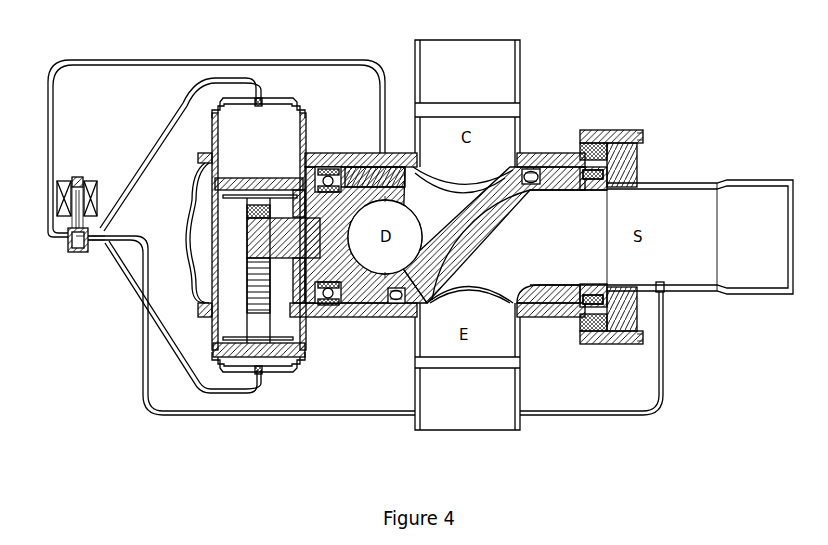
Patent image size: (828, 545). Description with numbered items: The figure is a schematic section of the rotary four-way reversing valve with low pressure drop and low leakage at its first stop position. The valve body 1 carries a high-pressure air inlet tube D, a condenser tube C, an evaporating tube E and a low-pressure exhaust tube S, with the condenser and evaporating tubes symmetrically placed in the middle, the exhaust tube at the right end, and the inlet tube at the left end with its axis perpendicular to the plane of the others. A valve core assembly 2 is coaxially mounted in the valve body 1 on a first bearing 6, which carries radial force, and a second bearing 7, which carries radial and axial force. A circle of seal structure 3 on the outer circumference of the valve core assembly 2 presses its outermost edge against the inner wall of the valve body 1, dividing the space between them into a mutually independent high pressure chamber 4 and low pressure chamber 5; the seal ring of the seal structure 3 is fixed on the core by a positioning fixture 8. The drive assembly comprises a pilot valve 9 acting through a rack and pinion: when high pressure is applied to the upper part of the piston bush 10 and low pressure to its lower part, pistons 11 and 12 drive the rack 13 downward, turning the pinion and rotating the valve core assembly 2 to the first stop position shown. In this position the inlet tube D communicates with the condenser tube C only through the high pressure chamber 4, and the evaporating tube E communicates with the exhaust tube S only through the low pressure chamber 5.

The valve body 1 is at (324, 162).
The valve core assembly 2 is at (333, 170).
The seal structure 3 is at (531, 177).
The high pressure chamber 4 is at (417, 190).
The low pressure chamber 5 is at (498, 245).
The first bearing 6 is at (340, 300).
The second bearing 7 is at (580, 133).
The positioning fixture 8 is at (362, 178).
The pilot valve 9 is at (90, 198).
The piston bush 10 is at (325, 290).
The piston 11 is at (288, 183).
The piston 12 is at (293, 360).
The rack 13 is at (262, 315).